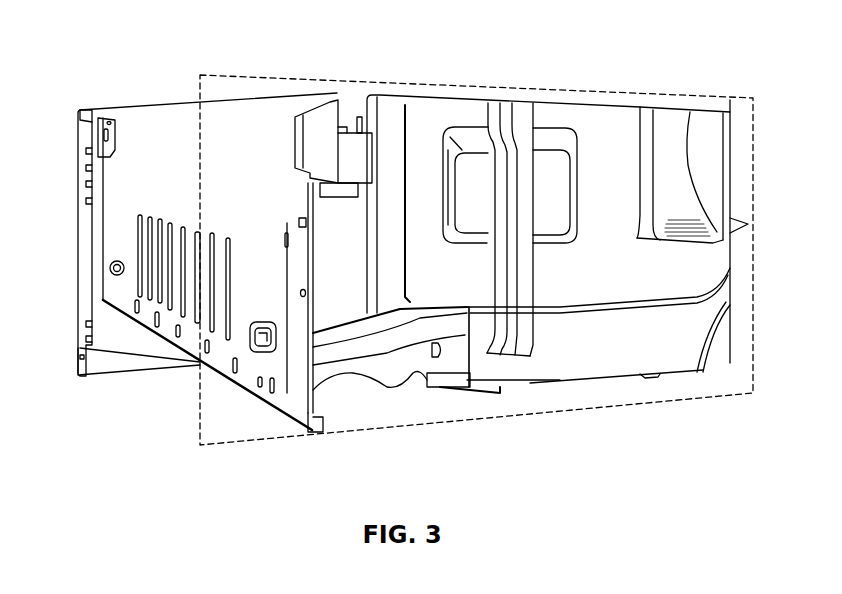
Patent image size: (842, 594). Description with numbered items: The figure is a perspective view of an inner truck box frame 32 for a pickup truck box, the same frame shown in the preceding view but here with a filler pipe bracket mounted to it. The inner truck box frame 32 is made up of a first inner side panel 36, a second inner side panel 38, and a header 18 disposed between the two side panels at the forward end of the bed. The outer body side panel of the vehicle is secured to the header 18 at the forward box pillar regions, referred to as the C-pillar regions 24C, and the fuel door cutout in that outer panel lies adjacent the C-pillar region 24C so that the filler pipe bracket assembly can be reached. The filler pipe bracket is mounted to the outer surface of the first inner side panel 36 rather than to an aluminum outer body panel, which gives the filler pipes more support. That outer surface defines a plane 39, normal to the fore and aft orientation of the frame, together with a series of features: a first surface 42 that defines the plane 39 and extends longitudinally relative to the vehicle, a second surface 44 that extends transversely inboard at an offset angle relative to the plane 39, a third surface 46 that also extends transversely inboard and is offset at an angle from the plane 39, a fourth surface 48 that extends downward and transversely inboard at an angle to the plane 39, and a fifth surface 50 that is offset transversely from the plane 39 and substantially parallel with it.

The header 18 is at (165, 137).
The C-pillar region 24C is at (93, 104).
The inner truck box frame 32 is at (704, 106).
The first inner side panel 36 is at (592, 137).
The second inner side panel 38 is at (132, 355).
The plane 39 is at (480, 92).
The first surface 42 is at (433, 287).
The second surface 44 is at (423, 357).
The third surface 46 is at (368, 338).
The fourth surface 48 is at (387, 293).
The fifth surface 50 is at (330, 303).